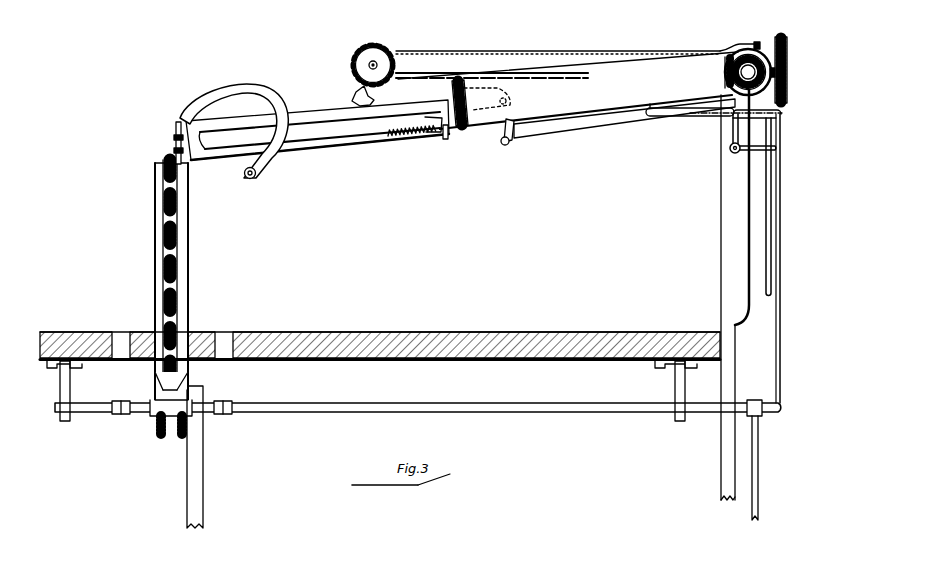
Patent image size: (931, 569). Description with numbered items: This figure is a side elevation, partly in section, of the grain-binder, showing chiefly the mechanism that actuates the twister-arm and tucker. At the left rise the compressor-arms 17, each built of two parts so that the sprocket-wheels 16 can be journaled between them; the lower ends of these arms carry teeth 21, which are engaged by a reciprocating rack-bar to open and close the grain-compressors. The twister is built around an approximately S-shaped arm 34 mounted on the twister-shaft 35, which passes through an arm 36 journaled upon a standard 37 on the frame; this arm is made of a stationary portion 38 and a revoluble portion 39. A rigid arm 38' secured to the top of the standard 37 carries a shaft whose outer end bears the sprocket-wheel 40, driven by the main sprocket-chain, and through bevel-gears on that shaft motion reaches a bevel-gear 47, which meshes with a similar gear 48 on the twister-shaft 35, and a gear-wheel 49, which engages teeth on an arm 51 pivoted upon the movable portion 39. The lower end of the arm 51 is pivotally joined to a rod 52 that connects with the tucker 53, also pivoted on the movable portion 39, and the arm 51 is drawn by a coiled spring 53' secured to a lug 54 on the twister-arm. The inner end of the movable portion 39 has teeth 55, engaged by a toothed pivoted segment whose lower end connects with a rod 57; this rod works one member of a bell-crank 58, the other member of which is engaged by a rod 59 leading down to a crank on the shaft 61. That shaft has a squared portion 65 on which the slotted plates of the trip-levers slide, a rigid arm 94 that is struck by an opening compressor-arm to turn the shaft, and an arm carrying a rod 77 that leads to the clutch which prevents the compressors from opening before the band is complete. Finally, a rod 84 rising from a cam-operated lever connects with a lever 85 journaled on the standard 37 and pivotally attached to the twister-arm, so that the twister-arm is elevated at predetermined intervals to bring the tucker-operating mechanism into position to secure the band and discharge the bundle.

The sprocket-wheels 16 is at (178, 272).
The compressor-arms 17 is at (155, 250).
The teeth 21 is at (162, 436).
The S-shaped arm 34 is at (175, 128).
The twister-shaft 35 is at (322, 122).
The arm 36 is at (515, 130).
The standard 37 is at (721, 210).
The stationary portion 38 is at (568, 90).
The rigid arm 38' is at (576, 50).
The revoluble portion 39 is at (435, 137).
The sprocket-wheel 40 is at (787, 53).
The bevel-gear 47 is at (757, 42).
The bevel-gear 48 is at (737, 55).
The gear-wheel 49 is at (374, 43).
The toothed arm 51 is at (356, 96).
The rod 52 is at (328, 156).
The tucker 53 is at (234, 123).
The coiled spring 53' is at (411, 147).
The lug 54 is at (449, 136).
The teeth 55 is at (452, 104).
The rod 57 is at (616, 121).
The bell-crank 58 is at (733, 133).
The rod 59 is at (776, 368).
The shaft 61 is at (609, 416).
The squared portion 65 is at (119, 414).
The rod 77 is at (760, 470).
The rod 84 is at (771, 262).
The lever 85 is at (672, 118).
The rigid arm 94 is at (190, 380).